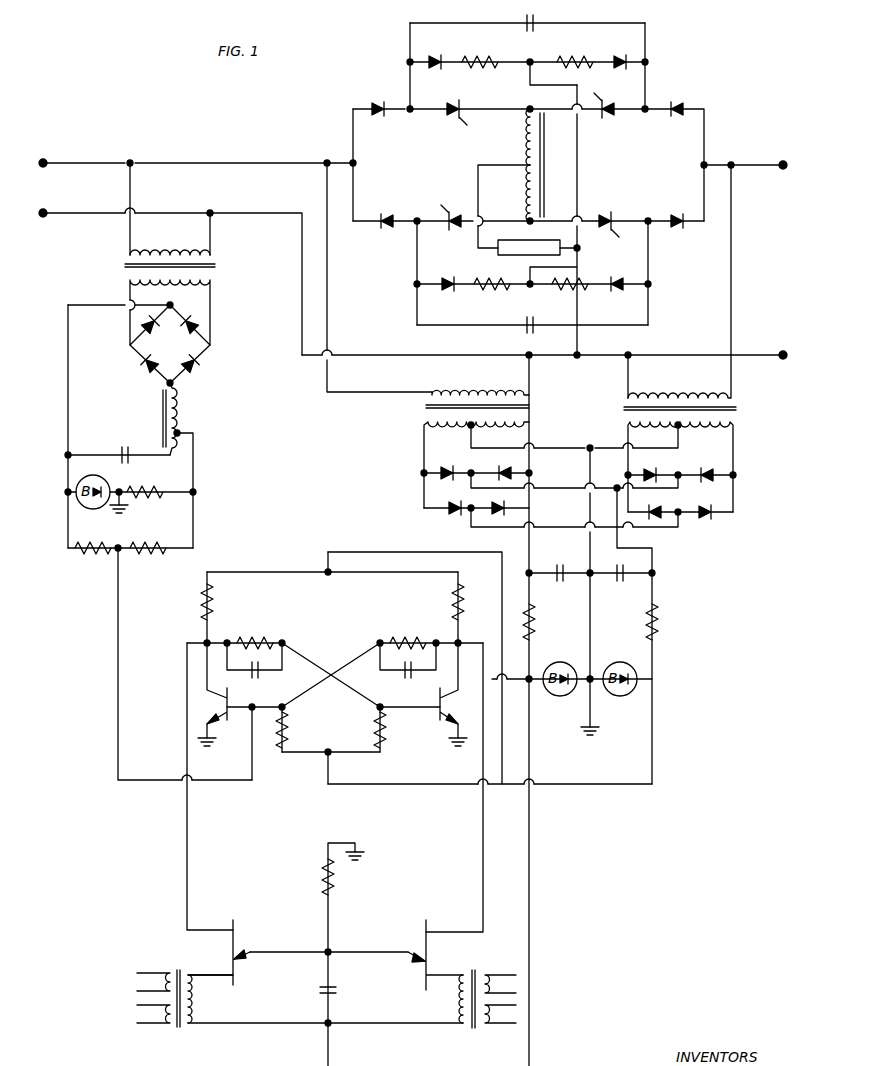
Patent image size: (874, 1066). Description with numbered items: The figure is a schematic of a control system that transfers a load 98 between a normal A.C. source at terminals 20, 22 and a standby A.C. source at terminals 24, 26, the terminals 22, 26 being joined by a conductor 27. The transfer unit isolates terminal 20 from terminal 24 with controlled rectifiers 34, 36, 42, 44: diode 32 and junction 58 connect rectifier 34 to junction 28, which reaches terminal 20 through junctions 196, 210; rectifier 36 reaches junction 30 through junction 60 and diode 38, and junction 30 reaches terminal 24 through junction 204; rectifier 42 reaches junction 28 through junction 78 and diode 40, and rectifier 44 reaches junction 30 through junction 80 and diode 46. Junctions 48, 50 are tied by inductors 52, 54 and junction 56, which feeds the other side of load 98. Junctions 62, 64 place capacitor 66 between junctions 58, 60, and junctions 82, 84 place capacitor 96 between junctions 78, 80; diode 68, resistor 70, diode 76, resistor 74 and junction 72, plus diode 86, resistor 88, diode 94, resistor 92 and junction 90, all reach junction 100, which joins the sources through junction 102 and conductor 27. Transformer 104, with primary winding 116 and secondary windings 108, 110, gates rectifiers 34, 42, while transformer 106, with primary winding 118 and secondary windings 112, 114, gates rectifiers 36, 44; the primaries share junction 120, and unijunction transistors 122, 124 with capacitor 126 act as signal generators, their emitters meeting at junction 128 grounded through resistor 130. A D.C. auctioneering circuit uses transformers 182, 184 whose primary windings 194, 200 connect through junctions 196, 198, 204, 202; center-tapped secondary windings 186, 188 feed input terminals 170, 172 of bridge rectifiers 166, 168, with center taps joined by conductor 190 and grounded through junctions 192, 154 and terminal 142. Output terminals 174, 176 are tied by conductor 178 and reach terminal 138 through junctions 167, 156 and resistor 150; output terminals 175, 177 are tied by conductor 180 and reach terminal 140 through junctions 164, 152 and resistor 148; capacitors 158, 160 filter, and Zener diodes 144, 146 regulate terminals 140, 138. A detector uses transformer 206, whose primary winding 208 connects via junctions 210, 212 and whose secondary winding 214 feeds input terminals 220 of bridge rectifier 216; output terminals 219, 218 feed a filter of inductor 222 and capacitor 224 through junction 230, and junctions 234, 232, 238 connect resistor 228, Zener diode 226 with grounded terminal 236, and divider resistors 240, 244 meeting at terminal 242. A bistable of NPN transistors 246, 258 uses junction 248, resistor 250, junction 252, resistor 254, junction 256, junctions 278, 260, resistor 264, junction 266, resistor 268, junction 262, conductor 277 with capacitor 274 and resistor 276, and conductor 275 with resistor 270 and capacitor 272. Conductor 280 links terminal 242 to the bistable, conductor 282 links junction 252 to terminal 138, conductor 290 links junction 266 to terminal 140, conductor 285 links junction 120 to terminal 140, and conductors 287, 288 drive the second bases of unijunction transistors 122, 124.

The terminal 20 is at (46, 158).
The terminal 22 is at (44, 218).
The terminal 24 is at (782, 158).
The terminal 26 is at (785, 365).
The conductor 27 is at (755, 354).
The junction 28 is at (356, 163).
The junction 30 is at (707, 160).
The diode 32 is at (376, 104).
The controlled rectifier 34 is at (460, 105).
The controlled rectifier 36 is at (610, 103).
The diode 38 is at (680, 104).
The diode 40 is at (384, 228).
The controlled rectifier 42 is at (452, 204).
The controlled rectifier 44 is at (612, 204).
The diode 46 is at (683, 230).
The junction 48 is at (536, 107).
The junction 50 is at (534, 223).
The inductor 52 is at (524, 139).
The inductor 54 is at (524, 192).
The junction 56 is at (524, 165).
The junction 58 is at (410, 112).
The junction 60 is at (645, 112).
The junction 62 is at (408, 62).
The junction 64 is at (648, 60).
The capacitor 66 is at (540, 20).
The diode 68 is at (436, 55).
The resistor 70 is at (480, 49).
The junction 72 is at (528, 60).
The resistor 74 is at (575, 49).
The diode 76 is at (618, 56).
The junction 78 is at (418, 218).
The junction 80 is at (652, 216).
The junction 82 is at (414, 284).
The junction 84 is at (651, 284).
The diode 86 is at (447, 292).
The resistor 88 is at (494, 292).
The junction 90 is at (528, 288).
The resistor 92 is at (584, 291).
The diode 94 is at (618, 292).
The capacitor 96 is at (522, 333).
The load 98 is at (496, 250).
The junction 100 is at (580, 249).
The junction 102 is at (580, 368).
The transformer 104 is at (176, 1032).
The second transformer 106 is at (455, 1014).
The secondary winding 108 is at (168, 970).
The secondary winding 110 is at (165, 1030).
The secondary winding 112 is at (514, 970).
The secondary winding 114 is at (490, 1030).
The primary winding 116 is at (196, 1002).
The primary winding 118 is at (460, 1004).
The junction 120 is at (326, 1027).
The unijunction transistor 122 is at (232, 952).
The unijunction transistor 124 is at (434, 963).
The capacitor 126 is at (338, 990).
The junction 128 is at (331, 950).
The resistor 130 is at (320, 876).
The terminal 138 is at (656, 679).
The terminal 140 is at (526, 684).
The grounded terminal 142 is at (593, 674).
The Zener diode 144 is at (552, 695).
The second Zener diode 146 is at (612, 696).
The resistor 148 is at (540, 626).
The resistor 150 is at (664, 620).
The junction 152 is at (536, 580).
The junction 154 is at (588, 576).
The junction 156 is at (656, 573).
The capacitor 158 is at (558, 566).
The capacitor 160 is at (616, 580).
The junction 164 is at (528, 548).
The full wave bridge rectifier 166 is at (430, 490).
The junction 167 is at (616, 492).
The full wave bridge rectifier 168 is at (740, 490).
The input terminals 170 is at (533, 473).
The input terminals 172 is at (736, 474).
The output terminal 174 is at (500, 460).
The output terminal 175 is at (469, 512).
The output terminal 176 is at (700, 460).
The output terminal 177 is at (684, 516).
The conductor 178 is at (556, 489).
The conductor 180 is at (574, 520).
The transformer 182 is at (424, 408).
The transformer 184 is at (738, 410).
The secondary winding 186 is at (460, 428).
The secondary winding 188 is at (684, 428).
The conductor 190 is at (558, 435).
The junction 192 is at (592, 446).
The primary winding 194 is at (452, 392).
The junction 196 is at (325, 160).
The junction 198 is at (536, 368).
The primary winding 200 is at (672, 392).
The junction 202 is at (632, 354).
The junction 204 is at (735, 170).
The transformer 206 is at (216, 266).
The primary winding 208 is at (168, 250).
The junction 210 is at (133, 162).
The junction 212 is at (212, 211).
The secondary winding 214 is at (170, 312).
The full wave bridge rectifier 216 is at (212, 358).
The output terminal 218 is at (173, 305).
The output terminal 219 is at (166, 384).
The input terminals 220 is at (130, 350).
The inductor 222 is at (184, 404).
The capacitor 224 is at (122, 450).
The Zener diode 226 is at (90, 506).
The resistor 228 is at (150, 498).
The junction 230 is at (66, 453).
The junction 232 is at (185, 432).
The junction 234 is at (66, 492).
The grounded terminal 236 is at (122, 490).
The junction 238 is at (196, 492).
The resistor 240 is at (90, 554).
The terminal 242 is at (116, 552).
The resistor 244 is at (150, 556).
The NPN transistor 246 is at (224, 708).
The junction 248 is at (204, 642).
The resistor 250 is at (216, 602).
The junction 252 is at (330, 575).
The resistor 254 is at (450, 598).
The junction 256 is at (461, 642).
The second NPN transistor 258 is at (443, 708).
The junction 260 is at (286, 708).
The junction 262 is at (386, 710).
The resistor 264 is at (292, 730).
The junction 266 is at (326, 756).
The resistor 268 is at (392, 740).
The resistor 270 is at (250, 636).
The capacitor 272 is at (260, 674).
The capacitor 274 is at (400, 672).
The conductor 275 is at (310, 645).
The resistor 276 is at (406, 636).
The conductor 277 is at (362, 640).
The junction 278 is at (250, 712).
The conductor 280 is at (162, 674).
The conductor 282 is at (362, 552).
The conductor 285 is at (532, 912).
The conductor 287 is at (182, 786).
The conductor 288 is at (482, 866).
The conductor 290 is at (410, 786).